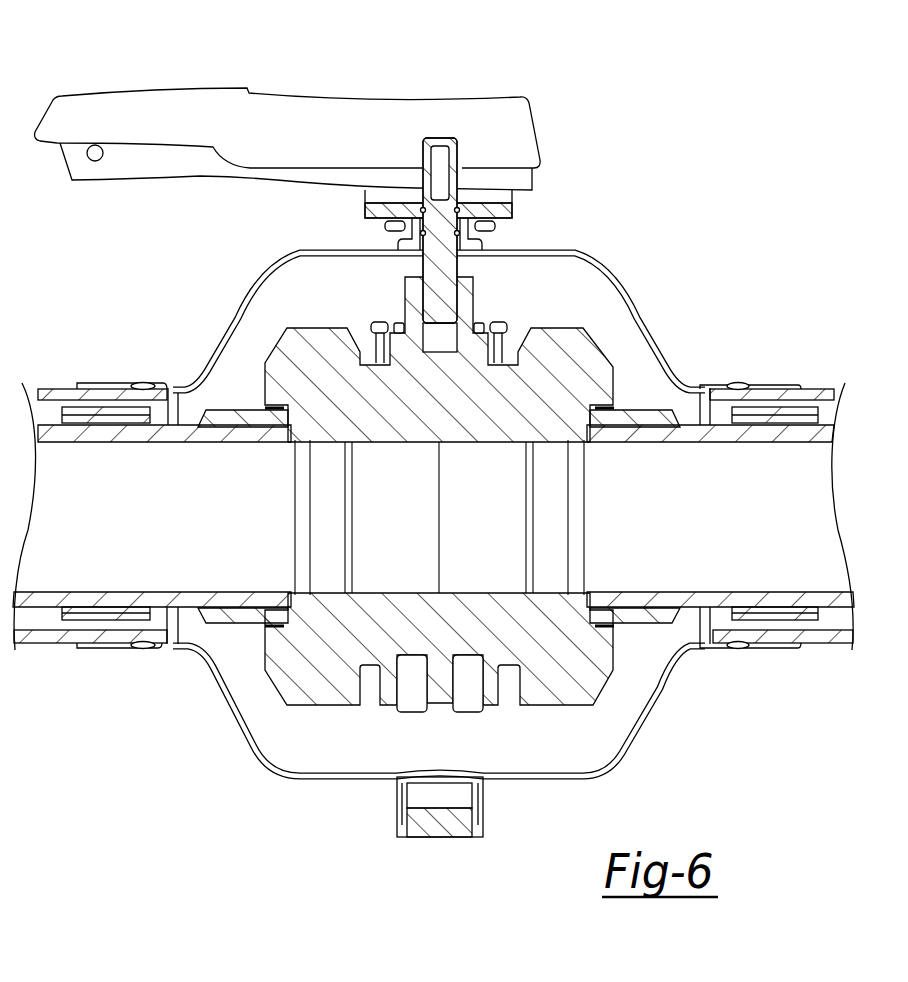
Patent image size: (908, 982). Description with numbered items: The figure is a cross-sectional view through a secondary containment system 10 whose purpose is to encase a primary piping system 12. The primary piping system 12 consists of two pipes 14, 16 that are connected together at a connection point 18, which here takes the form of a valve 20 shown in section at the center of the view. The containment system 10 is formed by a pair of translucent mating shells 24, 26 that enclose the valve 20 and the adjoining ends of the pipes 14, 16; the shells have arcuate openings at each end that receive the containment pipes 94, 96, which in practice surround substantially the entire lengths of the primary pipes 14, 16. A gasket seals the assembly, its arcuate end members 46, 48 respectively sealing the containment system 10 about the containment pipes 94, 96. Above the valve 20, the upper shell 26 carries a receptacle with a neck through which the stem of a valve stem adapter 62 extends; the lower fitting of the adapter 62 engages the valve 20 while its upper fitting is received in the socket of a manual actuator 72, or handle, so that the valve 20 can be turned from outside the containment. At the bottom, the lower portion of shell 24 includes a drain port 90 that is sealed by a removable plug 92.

The secondary containment system 10 is at (450, 468).
The primary piping system 12 is at (438, 466).
The pipe 14 is at (93, 432).
The pipe 16 is at (822, 437).
The connection point 18 is at (233, 615).
The valve 20 is at (588, 358).
The shell 24 is at (610, 766).
The mating shell 26 is at (583, 250).
The arcuate end member 46 is at (146, 386).
The arcuate end member 48 is at (739, 386).
The valve stem adapter 62 is at (433, 263).
The manual actuator 72 is at (312, 112).
The drain port 90 is at (378, 843).
The removable plug 92 is at (447, 834).
The pipe 94 is at (28, 644).
The pipe 96 is at (812, 644).